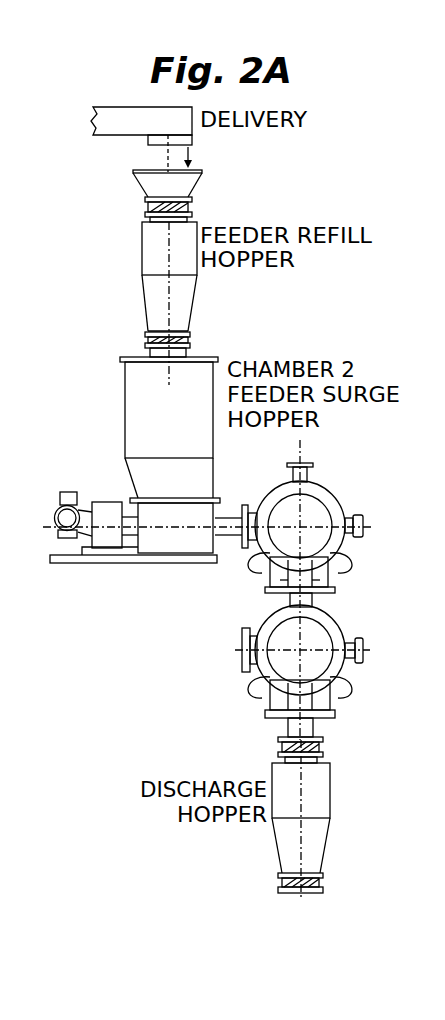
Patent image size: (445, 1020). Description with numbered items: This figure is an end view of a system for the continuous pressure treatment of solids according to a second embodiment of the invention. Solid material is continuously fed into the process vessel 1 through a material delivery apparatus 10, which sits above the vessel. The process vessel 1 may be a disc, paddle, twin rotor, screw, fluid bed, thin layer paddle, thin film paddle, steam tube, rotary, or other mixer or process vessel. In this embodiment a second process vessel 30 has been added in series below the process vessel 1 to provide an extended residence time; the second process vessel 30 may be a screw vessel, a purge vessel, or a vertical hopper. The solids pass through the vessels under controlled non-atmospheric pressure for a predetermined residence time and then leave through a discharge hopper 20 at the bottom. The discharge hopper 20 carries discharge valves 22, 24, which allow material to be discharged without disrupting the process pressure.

The material delivery apparatus 10 is at (198, 311).
The process vessel 1 is at (338, 485).
The second process vessel 30 is at (297, 657).
The discharge valve 22 is at (325, 753).
The discharge hopper 20 is at (338, 812).
The discharge valve 24 is at (322, 877).